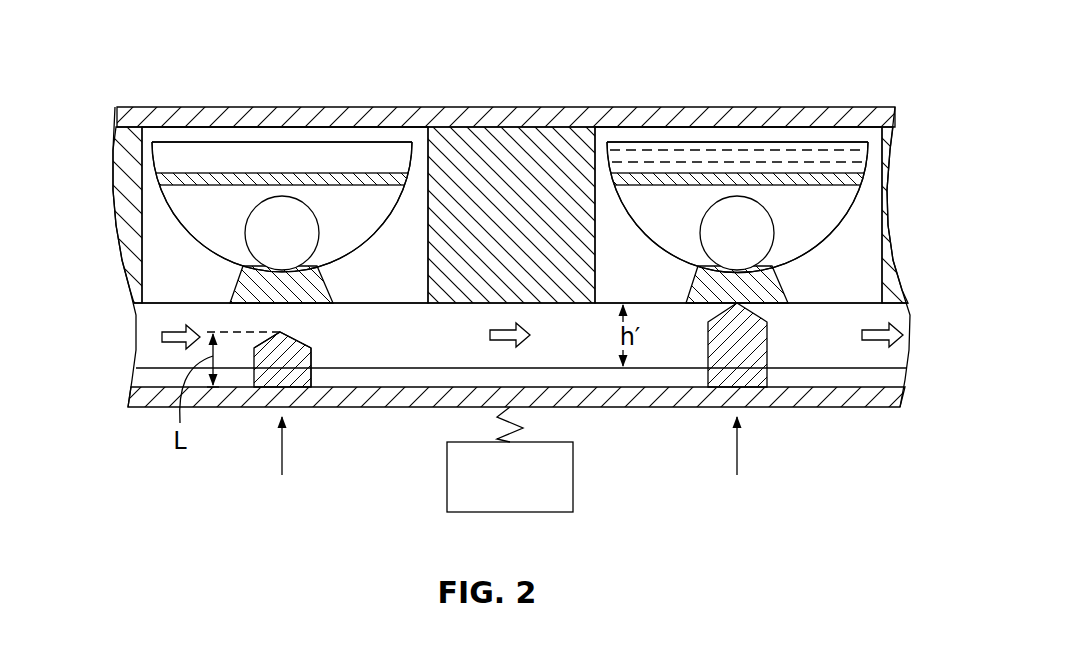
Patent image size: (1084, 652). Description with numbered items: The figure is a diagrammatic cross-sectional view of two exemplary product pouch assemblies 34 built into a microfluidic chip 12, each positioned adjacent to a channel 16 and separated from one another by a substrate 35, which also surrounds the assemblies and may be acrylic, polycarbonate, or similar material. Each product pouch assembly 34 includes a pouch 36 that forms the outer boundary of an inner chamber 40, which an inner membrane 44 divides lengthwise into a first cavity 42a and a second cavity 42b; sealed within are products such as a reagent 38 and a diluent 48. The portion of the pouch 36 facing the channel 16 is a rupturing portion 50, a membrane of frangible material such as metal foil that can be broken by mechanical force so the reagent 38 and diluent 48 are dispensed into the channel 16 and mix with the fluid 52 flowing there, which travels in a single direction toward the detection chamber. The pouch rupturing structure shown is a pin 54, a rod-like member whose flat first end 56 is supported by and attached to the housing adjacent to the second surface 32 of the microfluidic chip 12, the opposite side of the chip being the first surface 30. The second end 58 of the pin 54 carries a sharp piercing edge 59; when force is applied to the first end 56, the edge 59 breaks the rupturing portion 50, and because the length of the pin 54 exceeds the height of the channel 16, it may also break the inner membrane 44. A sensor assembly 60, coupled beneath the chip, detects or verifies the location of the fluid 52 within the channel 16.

The microfluidic chip 12 is at (186, 40).
The channel 16 is at (147, 323).
The first surface 30 is at (125, 115).
The second surface 32 is at (130, 396).
The product pouch assembly 34 is at (415, 195).
The substrate 35 is at (518, 150).
The pouch 36 is at (258, 130).
The reagent 38 is at (282, 235).
The inner chamber 40 is at (318, 158).
The first cavity 42a is at (383, 203).
The second cavity 42b is at (200, 157).
The inner membrane 44 is at (337, 173).
The diluent 48 is at (746, 160).
The rupturing portion 50 is at (327, 296).
The fluid 52 is at (155, 338).
The pin 54 is at (277, 372).
The first end 56 is at (311, 387).
The second end 58 is at (309, 342).
The edge 59 is at (282, 332).
The sensor assembly 60 is at (573, 475).